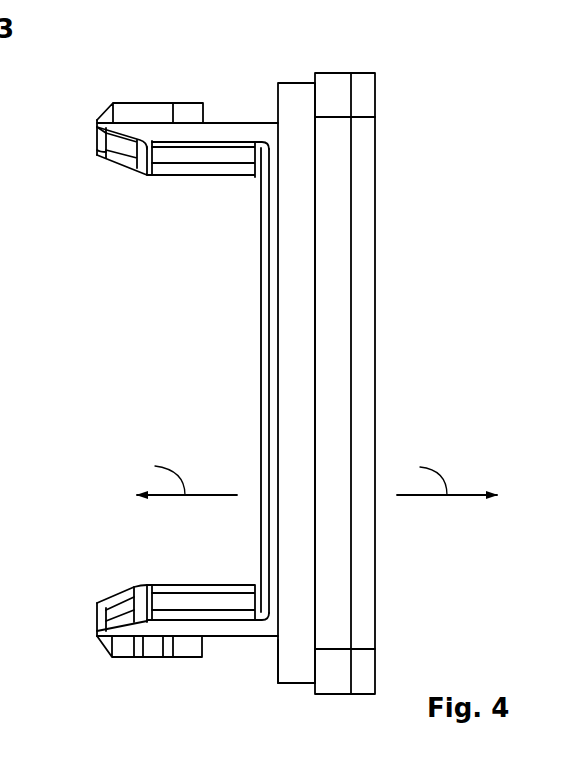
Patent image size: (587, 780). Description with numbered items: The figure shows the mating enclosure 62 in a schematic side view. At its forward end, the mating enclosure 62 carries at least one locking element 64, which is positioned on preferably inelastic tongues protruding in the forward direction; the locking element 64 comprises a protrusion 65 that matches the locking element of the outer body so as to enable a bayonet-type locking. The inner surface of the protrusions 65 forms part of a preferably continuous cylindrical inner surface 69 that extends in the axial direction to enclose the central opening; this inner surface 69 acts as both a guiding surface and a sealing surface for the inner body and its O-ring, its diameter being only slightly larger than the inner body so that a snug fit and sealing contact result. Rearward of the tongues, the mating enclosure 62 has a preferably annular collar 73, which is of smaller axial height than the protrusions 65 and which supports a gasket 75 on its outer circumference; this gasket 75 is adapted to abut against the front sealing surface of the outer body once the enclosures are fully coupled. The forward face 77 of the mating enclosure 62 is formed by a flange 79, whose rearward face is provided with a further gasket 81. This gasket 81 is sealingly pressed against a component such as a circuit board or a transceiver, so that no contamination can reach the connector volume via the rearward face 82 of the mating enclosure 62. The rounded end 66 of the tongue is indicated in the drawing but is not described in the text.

The mating enclosure 62 is at (415, 143).
The locking element 64 is at (144, 113).
The protrusion 65 is at (217, 135).
The rounded end of upper arm 66 is at (95, 140).
The inner surface 69 is at (198, 181).
The collar 73 is at (272, 328).
The gasket 75 is at (288, 258).
The forward face 77 is at (310, 673).
The flange 79 is at (332, 87).
The gasket 81 is at (365, 358).
The rearward face 82 is at (353, 622).